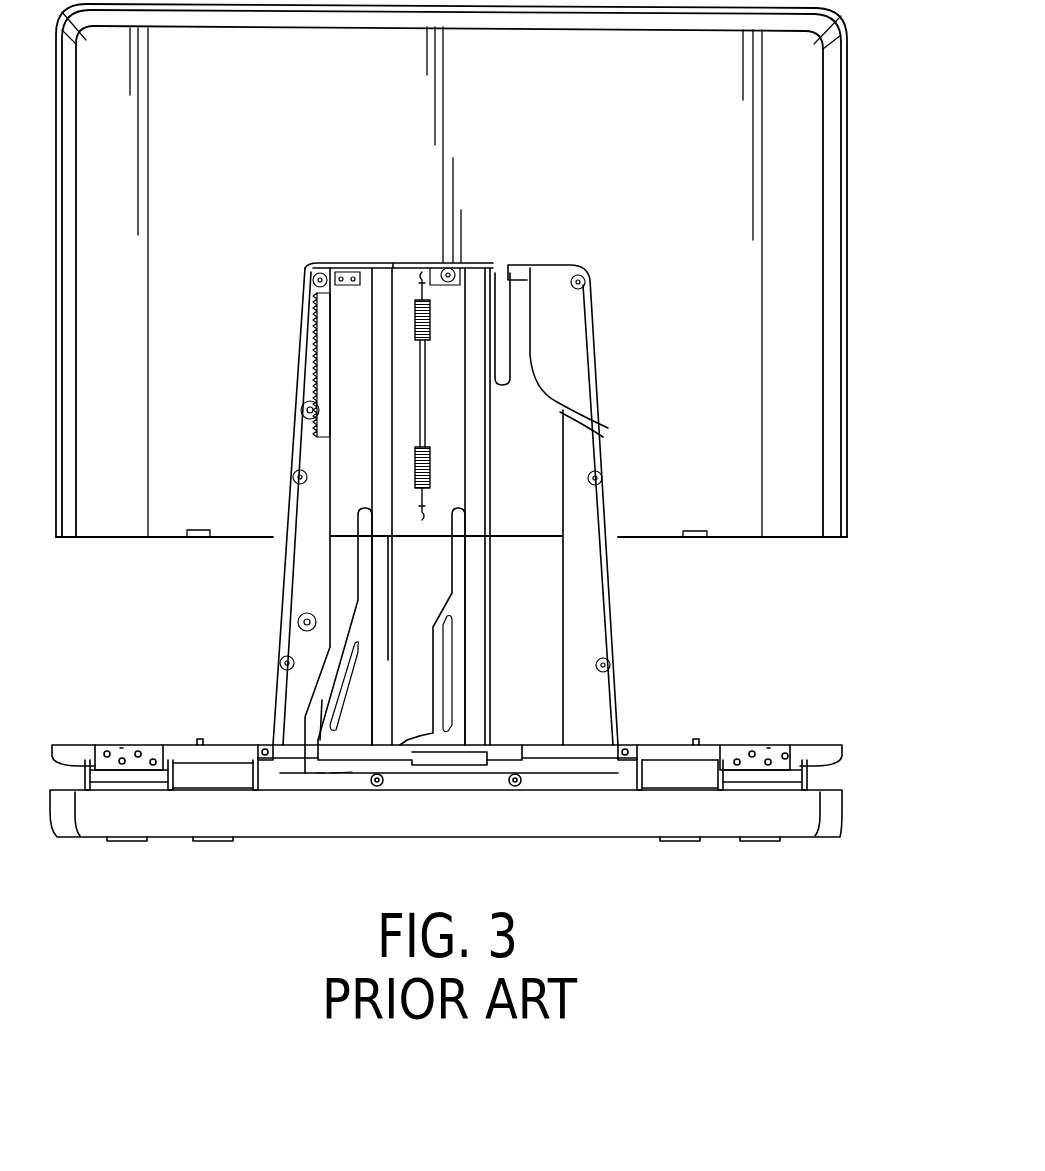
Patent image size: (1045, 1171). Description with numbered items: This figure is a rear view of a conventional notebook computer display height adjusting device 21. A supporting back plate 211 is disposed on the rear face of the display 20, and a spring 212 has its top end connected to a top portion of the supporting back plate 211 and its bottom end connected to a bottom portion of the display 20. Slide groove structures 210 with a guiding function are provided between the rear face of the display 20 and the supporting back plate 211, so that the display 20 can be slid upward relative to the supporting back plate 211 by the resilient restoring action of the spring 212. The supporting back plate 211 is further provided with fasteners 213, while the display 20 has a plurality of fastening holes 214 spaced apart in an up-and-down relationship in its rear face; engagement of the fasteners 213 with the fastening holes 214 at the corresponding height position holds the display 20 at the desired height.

The display 20 is at (832, 92).
The adjusting device 21 is at (650, 672).
The slide groove structures 210 is at (362, 342).
The supporting back plate 211 is at (307, 580).
The spring 212 is at (425, 358).
The fasteners 213 is at (370, 515).
The fastening holes 214 is at (375, 372).